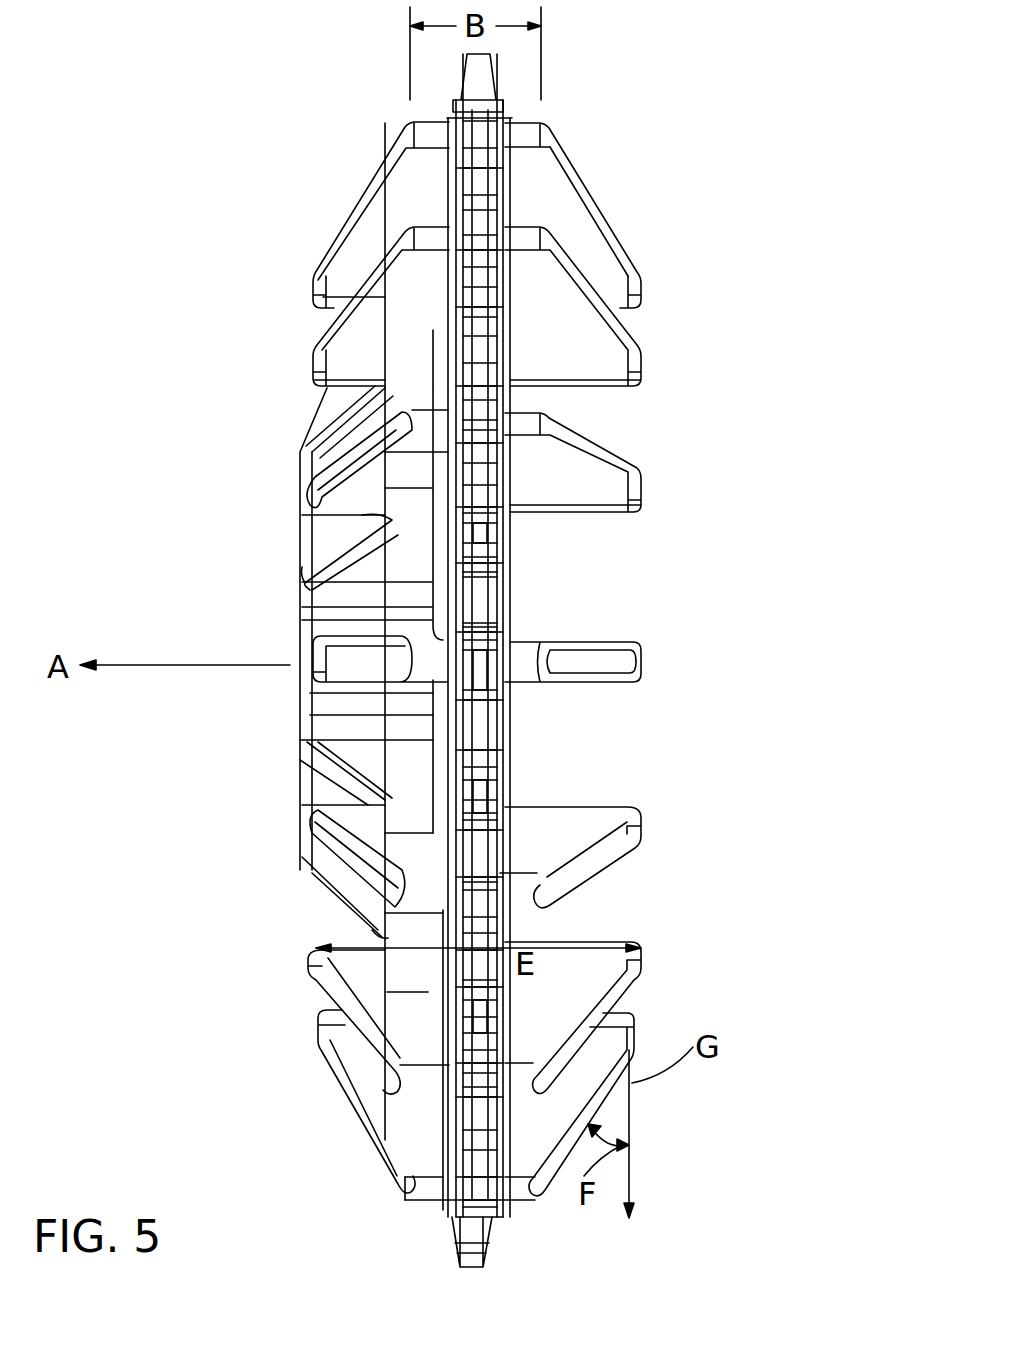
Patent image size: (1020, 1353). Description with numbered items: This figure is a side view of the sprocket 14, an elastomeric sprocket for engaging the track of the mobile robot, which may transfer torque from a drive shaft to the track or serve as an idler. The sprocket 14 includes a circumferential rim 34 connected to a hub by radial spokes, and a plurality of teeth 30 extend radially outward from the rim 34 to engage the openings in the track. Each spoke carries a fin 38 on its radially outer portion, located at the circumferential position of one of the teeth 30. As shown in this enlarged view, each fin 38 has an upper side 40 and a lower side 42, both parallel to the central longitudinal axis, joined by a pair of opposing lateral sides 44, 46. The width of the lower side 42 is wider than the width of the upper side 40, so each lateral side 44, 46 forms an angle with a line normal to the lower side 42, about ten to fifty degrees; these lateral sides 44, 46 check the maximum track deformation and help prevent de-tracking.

The sprocket 14 is at (826, 238).
The teeth 30 is at (479, 525).
The circumferential rim 34 is at (475, 595).
The fin 38 is at (530, 173).
The upper side 40 is at (422, 893).
The lower side 42 is at (583, 806).
The lateral side 44 is at (592, 208).
The lateral side 46 is at (349, 212).